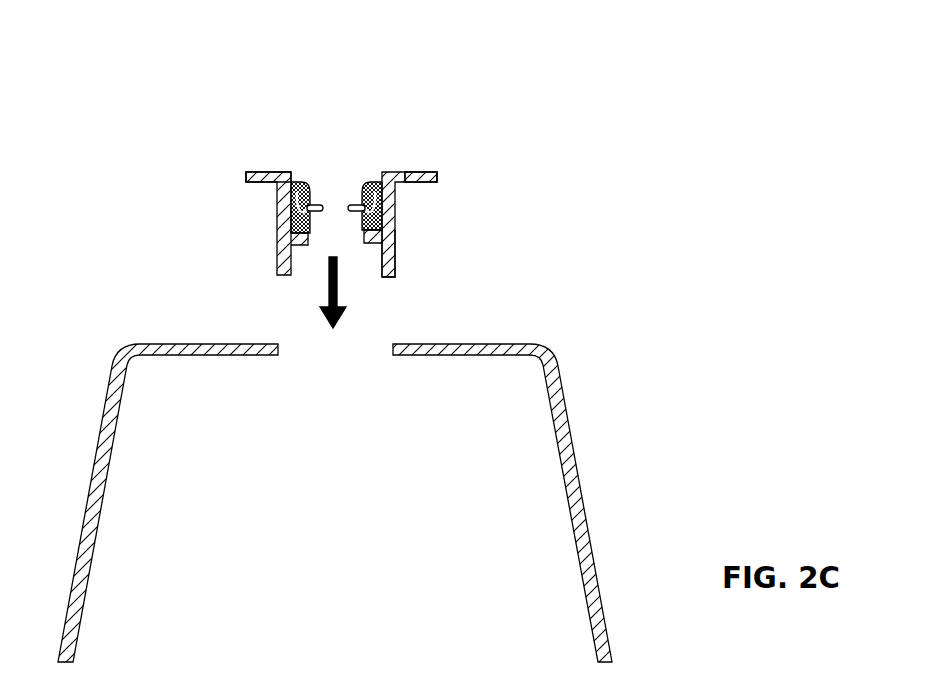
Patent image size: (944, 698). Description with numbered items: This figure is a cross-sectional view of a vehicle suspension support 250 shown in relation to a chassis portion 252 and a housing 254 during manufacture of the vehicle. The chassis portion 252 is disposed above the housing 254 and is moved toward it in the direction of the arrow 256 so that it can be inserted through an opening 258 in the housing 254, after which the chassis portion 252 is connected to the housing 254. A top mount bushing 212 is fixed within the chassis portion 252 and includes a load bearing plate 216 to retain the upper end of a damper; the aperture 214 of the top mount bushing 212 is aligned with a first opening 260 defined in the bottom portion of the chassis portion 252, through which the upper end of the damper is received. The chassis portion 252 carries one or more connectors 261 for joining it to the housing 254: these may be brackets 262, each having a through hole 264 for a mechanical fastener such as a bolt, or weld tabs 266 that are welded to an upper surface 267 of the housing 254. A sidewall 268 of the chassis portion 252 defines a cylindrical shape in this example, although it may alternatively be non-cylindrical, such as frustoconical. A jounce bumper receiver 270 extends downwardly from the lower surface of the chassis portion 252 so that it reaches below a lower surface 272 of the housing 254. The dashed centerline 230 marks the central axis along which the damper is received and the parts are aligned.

The top mount bushing 212 is at (308, 183).
The aperture 214 is at (333, 196).
The load bearing plate 216 is at (356, 204).
The central axis / flow direction 230 is at (347, 192).
The vehicle suspension support 250 is at (378, 454).
The chassis portion 252 is at (252, 233).
The housing 254 is at (90, 563).
The arrow 256 is at (328, 287).
The opening 258 is at (301, 355).
The first opening 260 is at (348, 241).
The connectors 261 is at (243, 168).
The brackets 262 is at (430, 172).
The through hole 264 is at (410, 170).
The weld tabs 266 is at (253, 171).
The upper surface 267 is at (468, 344).
The sidewall 268 is at (278, 213).
The jounce bumper receiver 270 is at (386, 280).
The lower surface 272 is at (205, 358).